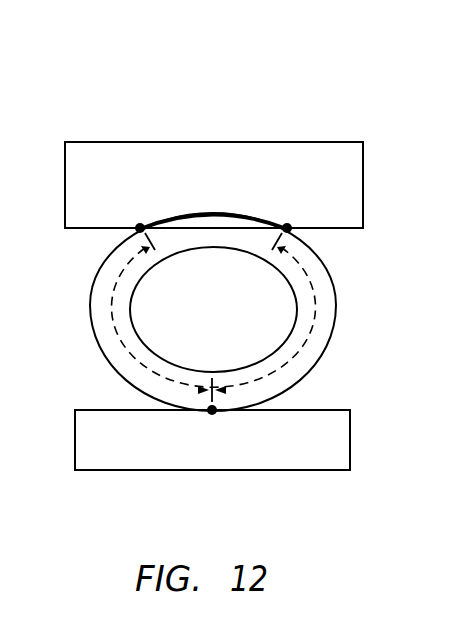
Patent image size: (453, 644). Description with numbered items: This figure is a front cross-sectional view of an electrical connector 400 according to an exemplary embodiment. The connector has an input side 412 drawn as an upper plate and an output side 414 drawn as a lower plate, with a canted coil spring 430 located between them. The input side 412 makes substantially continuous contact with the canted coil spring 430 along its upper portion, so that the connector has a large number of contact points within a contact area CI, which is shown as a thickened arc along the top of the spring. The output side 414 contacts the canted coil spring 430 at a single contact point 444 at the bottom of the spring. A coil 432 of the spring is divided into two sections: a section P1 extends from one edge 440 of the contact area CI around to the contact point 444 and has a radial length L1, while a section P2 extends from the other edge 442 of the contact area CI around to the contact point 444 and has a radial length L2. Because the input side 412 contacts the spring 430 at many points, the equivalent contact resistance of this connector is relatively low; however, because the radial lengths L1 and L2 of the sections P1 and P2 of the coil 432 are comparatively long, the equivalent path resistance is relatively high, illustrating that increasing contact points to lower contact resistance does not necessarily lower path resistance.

The electrical connector 400 is at (289, 59).
The input side 412 is at (350, 182).
The output side 414 is at (113, 455).
The canted coil spring 430 is at (222, 306).
The coil 432 is at (290, 374).
The edge of the contact area 440 is at (140, 228).
The edge of the contact area 442 is at (287, 228).
The contact point 444 is at (212, 410).
The contact area CI is at (218, 196).
The radial length L1 is at (112, 327).
The radial length L2 is at (306, 343).
The section of the coil P1 is at (117, 370).
The section of the coil P2 is at (338, 320).